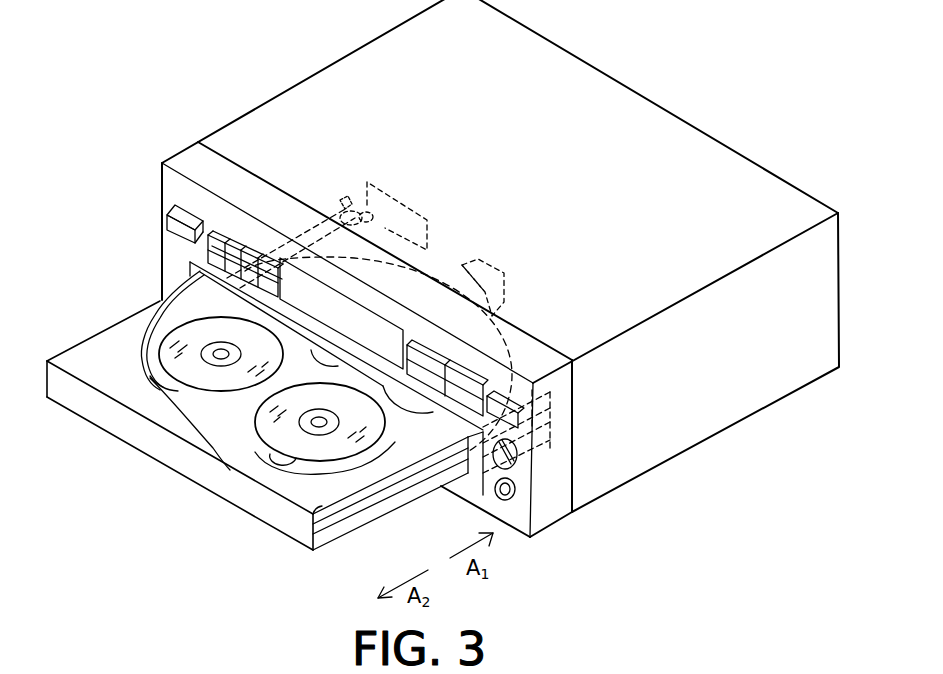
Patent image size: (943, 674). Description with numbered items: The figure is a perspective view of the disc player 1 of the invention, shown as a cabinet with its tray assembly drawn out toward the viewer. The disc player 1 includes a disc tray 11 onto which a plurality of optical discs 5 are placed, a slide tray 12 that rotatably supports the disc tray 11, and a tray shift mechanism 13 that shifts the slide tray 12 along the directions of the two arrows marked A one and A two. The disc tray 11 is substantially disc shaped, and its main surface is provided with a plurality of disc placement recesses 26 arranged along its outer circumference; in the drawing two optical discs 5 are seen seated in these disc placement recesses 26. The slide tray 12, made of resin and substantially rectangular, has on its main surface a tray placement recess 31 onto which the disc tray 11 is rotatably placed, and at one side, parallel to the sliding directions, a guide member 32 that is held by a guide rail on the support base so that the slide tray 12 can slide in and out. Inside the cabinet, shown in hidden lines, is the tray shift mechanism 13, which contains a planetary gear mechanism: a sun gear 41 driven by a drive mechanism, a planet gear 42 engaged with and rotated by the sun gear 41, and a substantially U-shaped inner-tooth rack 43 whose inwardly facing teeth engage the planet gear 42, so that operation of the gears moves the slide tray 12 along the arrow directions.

The disc player 1 is at (614, 512).
The disc tray 11 is at (220, 428).
The slide tray 12 is at (317, 508).
The tray shift mechanism 13 is at (332, 178).
The optical disc 5 is at (190, 330).
The disc placement recess 26 is at (170, 386).
The tray placement recess 31 is at (285, 457).
The guide member 32 is at (382, 518).
The sun gear 41 is at (372, 208).
The planet gear 42 is at (358, 210).
The inner-tooth rack 43 is at (344, 200).